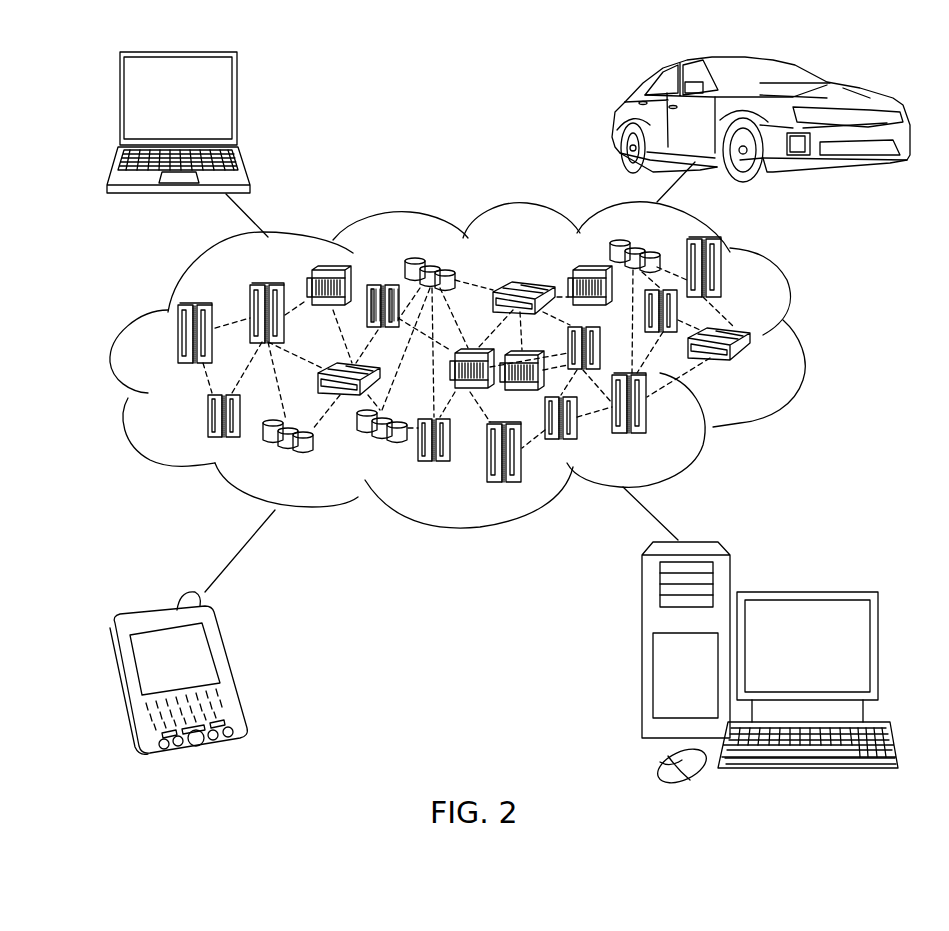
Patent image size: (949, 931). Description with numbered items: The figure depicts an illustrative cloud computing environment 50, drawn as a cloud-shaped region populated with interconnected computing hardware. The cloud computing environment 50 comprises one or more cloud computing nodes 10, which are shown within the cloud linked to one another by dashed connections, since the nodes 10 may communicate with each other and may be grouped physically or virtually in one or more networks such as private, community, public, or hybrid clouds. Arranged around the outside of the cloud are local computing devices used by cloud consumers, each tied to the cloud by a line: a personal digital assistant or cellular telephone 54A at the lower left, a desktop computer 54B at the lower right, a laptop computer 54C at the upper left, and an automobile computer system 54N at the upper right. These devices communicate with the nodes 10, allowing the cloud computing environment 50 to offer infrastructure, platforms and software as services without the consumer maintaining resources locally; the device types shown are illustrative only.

The cloud computing node 10 is at (757, 367).
The cloud computing environment 50 is at (803, 340).
The personal digital assistant or cellular telephone 54A is at (232, 672).
The desktop computer 54B is at (805, 590).
The laptop computer 54C is at (240, 108).
The automobile computer system 54N is at (617, 122).